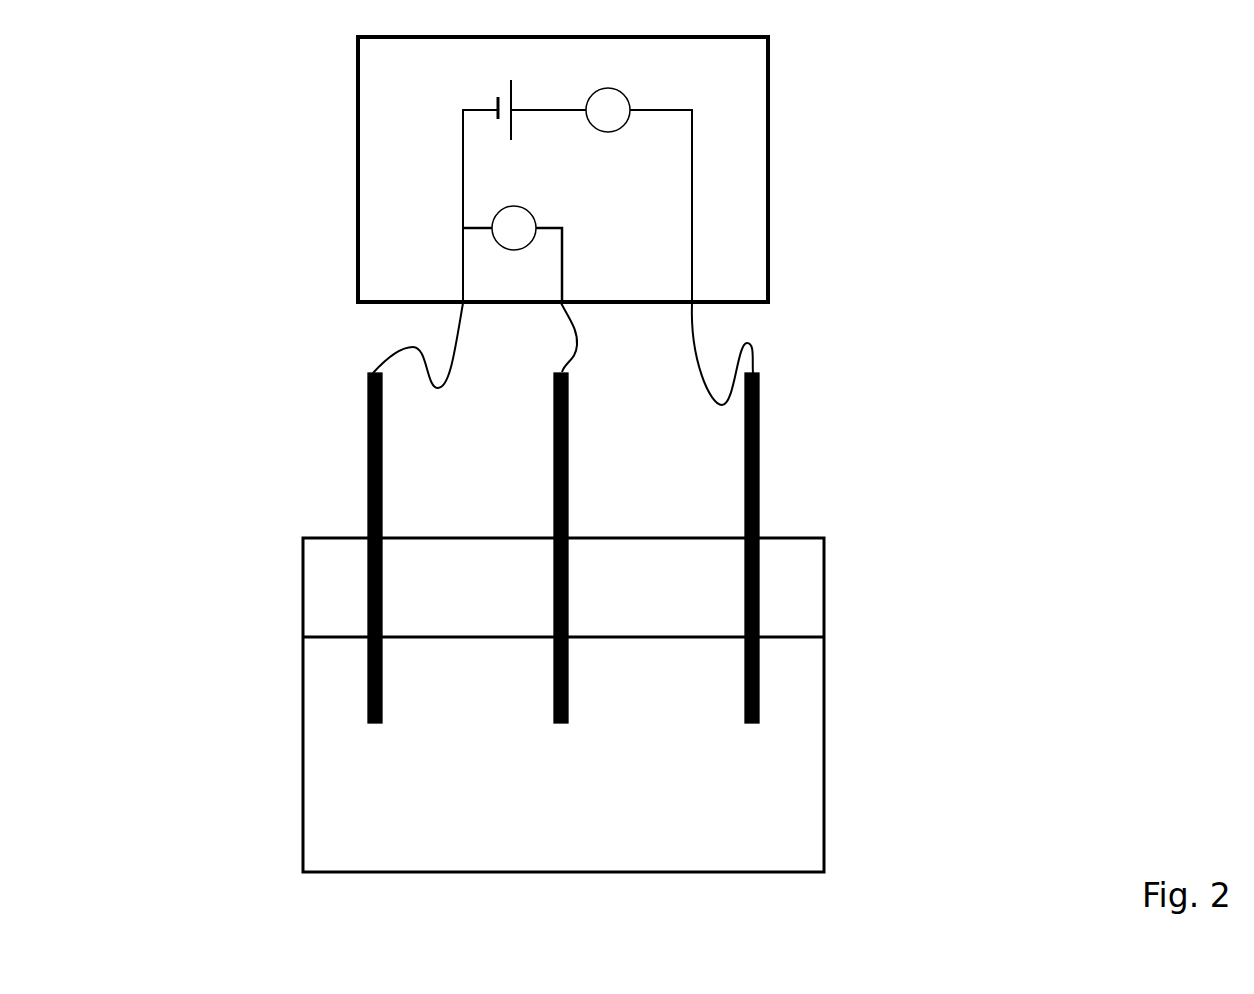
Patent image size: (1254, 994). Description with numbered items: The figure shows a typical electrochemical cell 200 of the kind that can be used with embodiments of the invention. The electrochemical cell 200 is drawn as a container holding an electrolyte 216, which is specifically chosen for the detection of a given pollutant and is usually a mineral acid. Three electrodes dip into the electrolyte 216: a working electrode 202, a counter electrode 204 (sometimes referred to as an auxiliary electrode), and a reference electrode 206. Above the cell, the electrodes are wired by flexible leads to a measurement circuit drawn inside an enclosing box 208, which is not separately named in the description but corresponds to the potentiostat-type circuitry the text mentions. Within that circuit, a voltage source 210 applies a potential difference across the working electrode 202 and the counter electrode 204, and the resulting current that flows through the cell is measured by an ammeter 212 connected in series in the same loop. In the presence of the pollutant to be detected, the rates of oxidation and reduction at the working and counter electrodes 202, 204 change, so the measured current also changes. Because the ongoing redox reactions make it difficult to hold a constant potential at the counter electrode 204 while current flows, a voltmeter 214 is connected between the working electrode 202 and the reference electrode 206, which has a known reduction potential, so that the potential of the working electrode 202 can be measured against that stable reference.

The electrochemical cell 200 is at (302, 665).
The working electrode 202 is at (382, 499).
The counter electrode 204 is at (760, 468).
The reference electrode 206 is at (569, 504).
The control circuit / potentiostat 208 is at (356, 118).
The voltage source 210 is at (496, 100).
The ammeter 212 is at (628, 95).
The voltmeter 214 is at (532, 210).
The electrolyte 216 is at (770, 793).